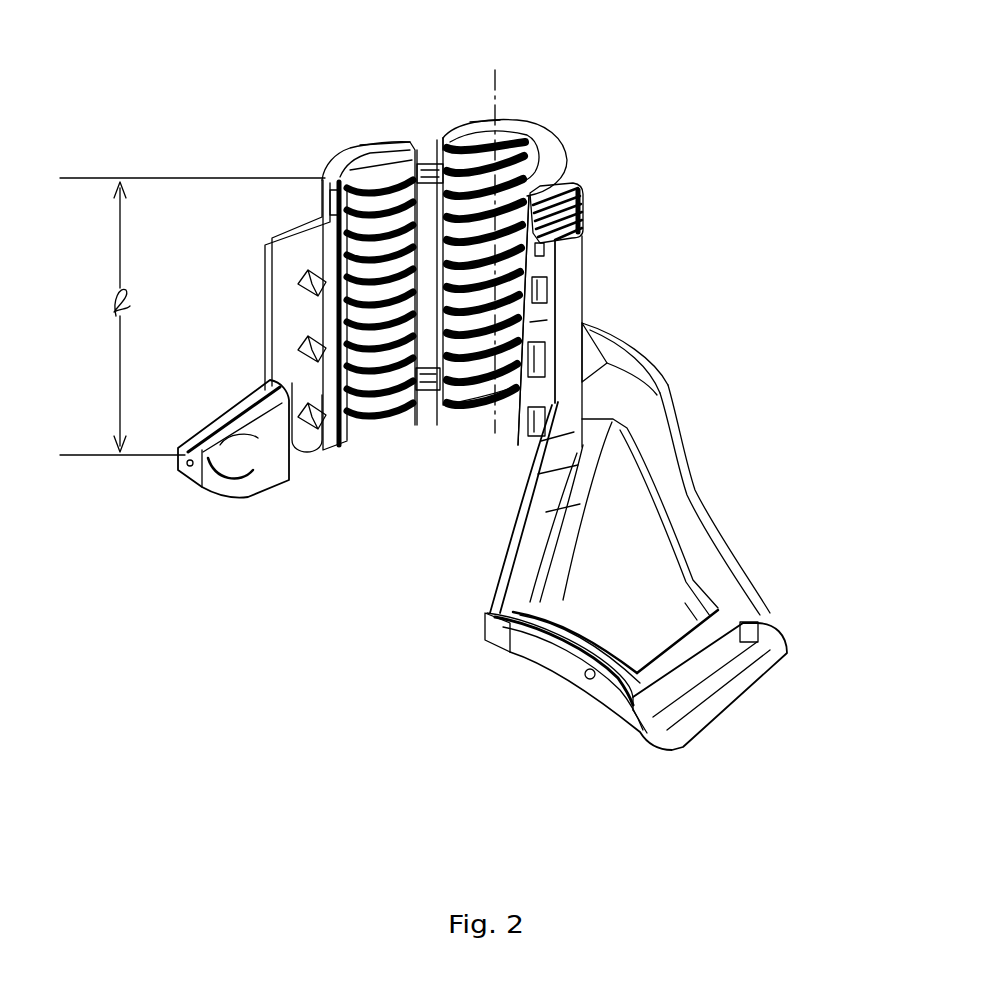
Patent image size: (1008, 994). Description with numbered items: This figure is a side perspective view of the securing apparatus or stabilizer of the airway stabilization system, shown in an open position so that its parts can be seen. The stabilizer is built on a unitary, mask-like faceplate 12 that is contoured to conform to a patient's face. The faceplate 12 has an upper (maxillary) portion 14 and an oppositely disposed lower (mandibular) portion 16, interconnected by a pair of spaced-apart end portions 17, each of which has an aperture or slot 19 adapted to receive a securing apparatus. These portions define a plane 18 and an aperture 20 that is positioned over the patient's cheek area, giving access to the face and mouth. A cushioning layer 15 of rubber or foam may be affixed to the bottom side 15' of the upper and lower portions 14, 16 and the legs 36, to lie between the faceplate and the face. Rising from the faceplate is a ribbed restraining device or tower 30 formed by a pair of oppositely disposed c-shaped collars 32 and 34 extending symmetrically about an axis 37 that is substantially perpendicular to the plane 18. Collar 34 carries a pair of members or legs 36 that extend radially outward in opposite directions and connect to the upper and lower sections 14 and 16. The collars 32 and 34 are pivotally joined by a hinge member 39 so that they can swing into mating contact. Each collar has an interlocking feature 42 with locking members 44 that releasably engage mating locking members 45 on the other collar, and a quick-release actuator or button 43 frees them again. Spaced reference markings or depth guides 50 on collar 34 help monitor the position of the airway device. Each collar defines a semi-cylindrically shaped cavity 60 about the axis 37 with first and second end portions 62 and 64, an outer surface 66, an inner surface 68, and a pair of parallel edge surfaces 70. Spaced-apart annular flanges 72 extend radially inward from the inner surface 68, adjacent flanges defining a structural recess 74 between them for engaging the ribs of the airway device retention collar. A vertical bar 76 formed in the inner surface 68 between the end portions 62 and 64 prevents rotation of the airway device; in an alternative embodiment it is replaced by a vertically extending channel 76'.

The faceplate 12 is at (517, 608).
The upper (maxillary) portion 14 is at (617, 670).
The cushioning layer 15 is at (548, 676).
The bottom side 15' is at (599, 634).
The lower (mandibular) portion 16 is at (688, 530).
The end portion 17 is at (225, 423).
The plane 18 is at (371, 594).
The aperture or slot 19 is at (181, 470).
The aperture 20 is at (685, 612).
The ribbed restraining device or tower 30 is at (578, 186).
The c-shaped collar 32 is at (352, 152).
The c-shaped collar 34 is at (512, 134).
The members or legs 36 is at (298, 457).
The axis 37 is at (497, 52).
The hinge member 39 is at (428, 247).
The interlocking feature 42 is at (287, 230).
The quick-release actuator or button 43 is at (586, 218).
The locking member 44 is at (302, 283).
The mating locking member 45 is at (548, 292).
The reference markings or depth guides 50 is at (547, 320).
The semi-cylindrically shaped cavity 60 is at (386, 164).
The first end portion 62 is at (397, 140).
The second end portion 64 is at (395, 420).
The outer surface 66 is at (568, 398).
The inner surface 68 is at (435, 400).
The edge surface 70 is at (333, 205).
The annular flange 72 is at (330, 190).
The structural recess 74 is at (578, 496).
The vertical bar 76 is at (564, 147).
The vertically extending channel 76' is at (494, 157).